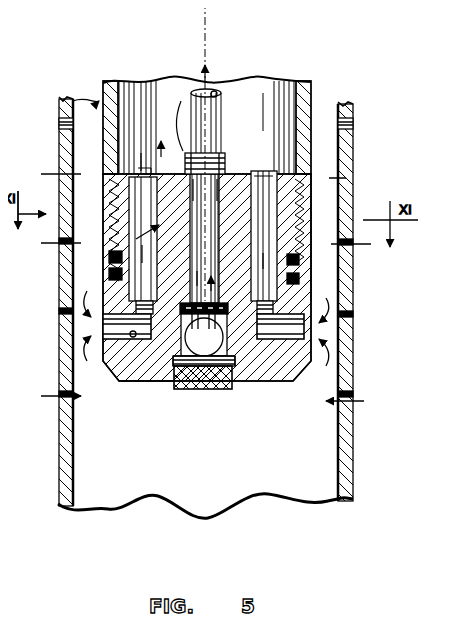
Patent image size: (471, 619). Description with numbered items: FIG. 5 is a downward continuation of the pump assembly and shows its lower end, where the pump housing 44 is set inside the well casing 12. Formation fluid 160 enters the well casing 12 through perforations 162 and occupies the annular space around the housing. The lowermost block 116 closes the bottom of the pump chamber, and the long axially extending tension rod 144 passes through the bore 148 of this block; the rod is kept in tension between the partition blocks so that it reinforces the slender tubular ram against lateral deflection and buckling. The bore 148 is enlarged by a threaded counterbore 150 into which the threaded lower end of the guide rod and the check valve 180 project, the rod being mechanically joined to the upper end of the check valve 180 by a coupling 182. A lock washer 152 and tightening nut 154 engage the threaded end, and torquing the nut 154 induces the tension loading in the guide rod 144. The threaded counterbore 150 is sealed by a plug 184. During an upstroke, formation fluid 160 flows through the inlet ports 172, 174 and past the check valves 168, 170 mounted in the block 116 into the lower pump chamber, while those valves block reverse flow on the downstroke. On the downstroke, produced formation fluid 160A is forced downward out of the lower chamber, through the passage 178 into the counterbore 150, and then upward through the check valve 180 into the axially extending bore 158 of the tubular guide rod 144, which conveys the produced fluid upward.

The well casing 12 is at (354, 446).
The pump housing 44 is at (98, 85).
The lowermost block 116 is at (150, 382).
The tension rod 144 is at (222, 116).
The bore 148 is at (208, 213).
The threaded counterbore 150 is at (178, 350).
The lock washer 152 is at (226, 306).
The nut 154 is at (221, 330).
The bore 158 is at (212, 90).
The formation fluid 160 is at (58, 165).
The produced formation fluid 160A is at (207, 76).
The perforations 162 is at (72, 318).
The check valve 168 is at (120, 247).
The check valve 170 is at (310, 195).
The inlet port 172 is at (133, 337).
The inlet port 174 is at (290, 335).
The passage 178 is at (176, 389).
The check valve 180 is at (150, 212).
The coupling 182 is at (187, 157).
The plug 184 is at (204, 389).